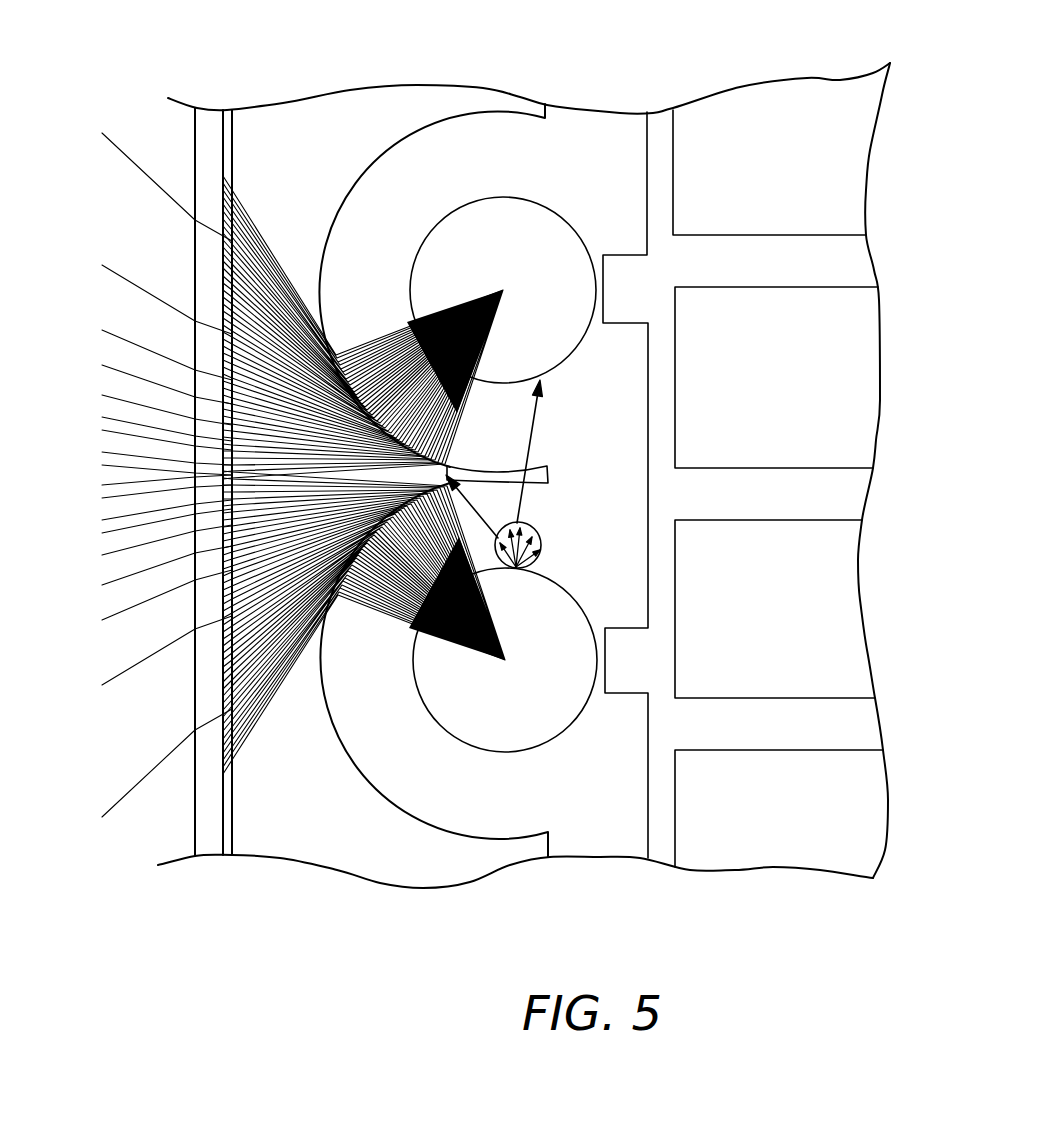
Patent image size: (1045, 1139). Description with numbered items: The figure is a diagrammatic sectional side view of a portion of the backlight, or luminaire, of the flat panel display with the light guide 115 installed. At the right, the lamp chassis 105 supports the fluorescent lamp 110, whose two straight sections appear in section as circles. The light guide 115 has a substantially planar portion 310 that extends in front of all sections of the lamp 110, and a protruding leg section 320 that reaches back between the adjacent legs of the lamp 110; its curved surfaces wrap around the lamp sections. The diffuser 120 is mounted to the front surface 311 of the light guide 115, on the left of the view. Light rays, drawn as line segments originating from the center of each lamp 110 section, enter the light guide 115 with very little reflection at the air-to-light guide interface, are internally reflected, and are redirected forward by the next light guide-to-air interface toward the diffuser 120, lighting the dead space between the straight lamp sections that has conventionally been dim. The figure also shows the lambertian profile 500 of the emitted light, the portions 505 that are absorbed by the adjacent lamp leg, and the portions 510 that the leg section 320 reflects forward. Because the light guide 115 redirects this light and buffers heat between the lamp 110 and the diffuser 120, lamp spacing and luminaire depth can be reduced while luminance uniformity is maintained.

The lamp chassis 105 is at (773, 233).
The lamp 110 is at (570, 222).
The light guide 115 is at (342, 888).
The diffuser 120 is at (205, 138).
The substantially planar portion 310 is at (278, 795).
The front surface 311 is at (232, 173).
The protruding leg section 320 is at (486, 106).
The lambertian profile 500 is at (547, 545).
The absorbed portion of light 505 is at (538, 432).
The reflected portion of light 510 is at (480, 473).